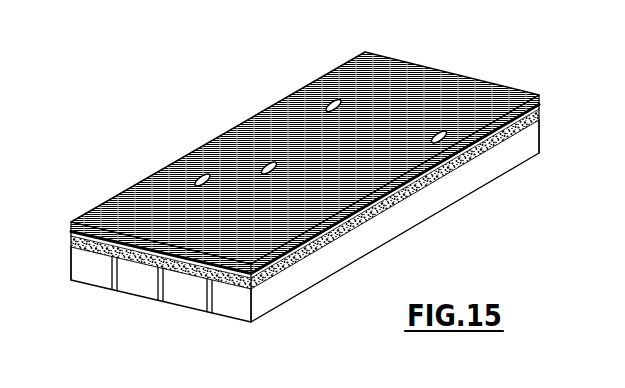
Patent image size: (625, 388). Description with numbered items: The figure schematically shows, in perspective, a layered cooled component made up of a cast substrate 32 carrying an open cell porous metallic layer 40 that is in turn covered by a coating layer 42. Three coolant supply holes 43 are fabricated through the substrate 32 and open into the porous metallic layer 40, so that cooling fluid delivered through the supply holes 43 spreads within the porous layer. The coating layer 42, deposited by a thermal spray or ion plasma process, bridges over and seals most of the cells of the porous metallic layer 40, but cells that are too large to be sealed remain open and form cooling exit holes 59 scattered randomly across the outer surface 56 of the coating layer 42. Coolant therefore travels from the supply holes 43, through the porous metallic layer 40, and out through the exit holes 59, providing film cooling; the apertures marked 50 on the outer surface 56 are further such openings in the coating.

The substrate 32 is at (493, 163).
The open cell porous metallic layer 40 is at (540, 112).
The coating layer 42 is at (74, 229).
The coolant supply holes 43 is at (206, 299).
The apertures 50 is at (200, 178).
The outer surface of the coating layer 56 is at (433, 87).
The cooling exit holes 59 is at (333, 106).